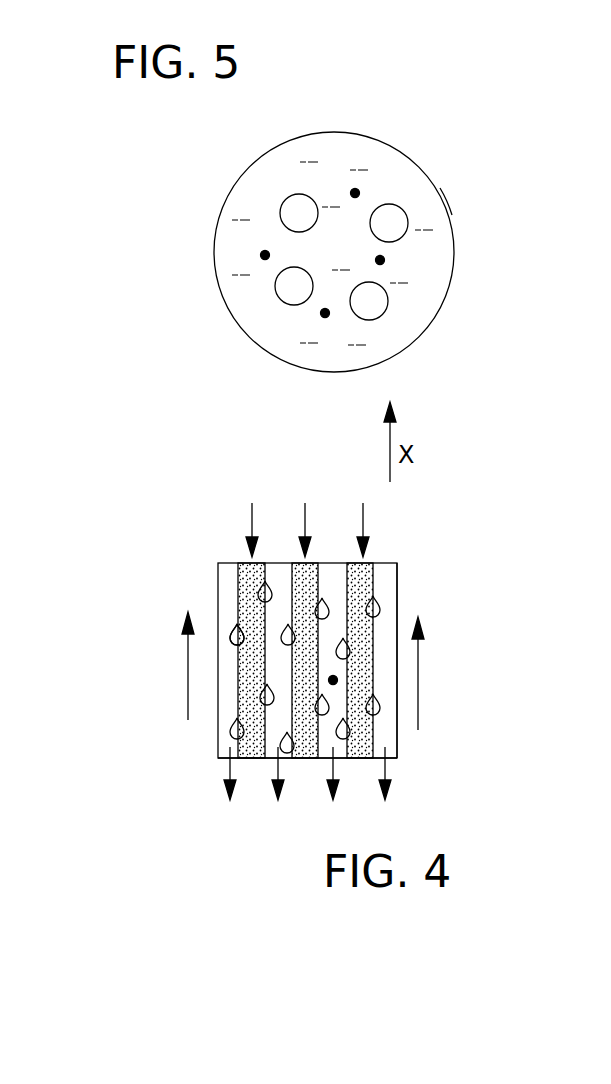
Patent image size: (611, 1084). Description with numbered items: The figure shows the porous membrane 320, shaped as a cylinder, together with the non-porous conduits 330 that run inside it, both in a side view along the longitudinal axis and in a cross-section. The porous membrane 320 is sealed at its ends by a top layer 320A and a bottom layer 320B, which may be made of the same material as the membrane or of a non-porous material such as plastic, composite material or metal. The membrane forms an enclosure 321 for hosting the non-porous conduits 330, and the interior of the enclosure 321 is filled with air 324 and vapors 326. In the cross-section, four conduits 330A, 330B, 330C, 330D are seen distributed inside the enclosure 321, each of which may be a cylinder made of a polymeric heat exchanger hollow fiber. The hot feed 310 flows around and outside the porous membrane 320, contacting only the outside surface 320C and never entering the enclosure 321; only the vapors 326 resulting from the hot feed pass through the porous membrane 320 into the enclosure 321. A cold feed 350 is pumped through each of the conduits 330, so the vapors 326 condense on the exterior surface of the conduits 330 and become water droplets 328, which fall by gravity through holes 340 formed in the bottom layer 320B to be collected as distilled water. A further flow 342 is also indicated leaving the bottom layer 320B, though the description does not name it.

In FIG. 4, the hot feed 310 is at (418, 653).
In FIG. 5, the porous membrane 320 is at (466, 213).
In FIG. 4, the porous membrane 320 is at (206, 582).
In FIG. 4, the top layer 320A is at (380, 567).
In FIG. 4, the bottom layer 320B is at (395, 762).
In FIG. 5, the outside surface 320C is at (440, 188).
In FIG. 4, the outside surface 320C is at (400, 723).
In FIG. 5, the enclosure 321 is at (422, 253).
In FIG. 4, the enclosure 321 is at (336, 680).
In FIG. 5, the air 324 is at (352, 257).
In FIG. 5, the vapors 326 is at (263, 253).
In FIG. 4, the water droplets 328 is at (237, 645).
In FIG. 4, the non-porous conduits 330 is at (268, 605).
In FIG. 5, the non-porous conduit 330A is at (386, 310).
In FIG. 5, the non-porous conduit 330B is at (397, 205).
In FIG. 5, the non-porous conduit 330C is at (285, 197).
In FIG. 5, the non-porous conduit 330D is at (276, 293).
In FIG. 4, the holes 340 is at (270, 767).
In FIG. 4, the gas flow 342 is at (337, 787).
In FIG. 4, the cold feed 350 is at (250, 523).